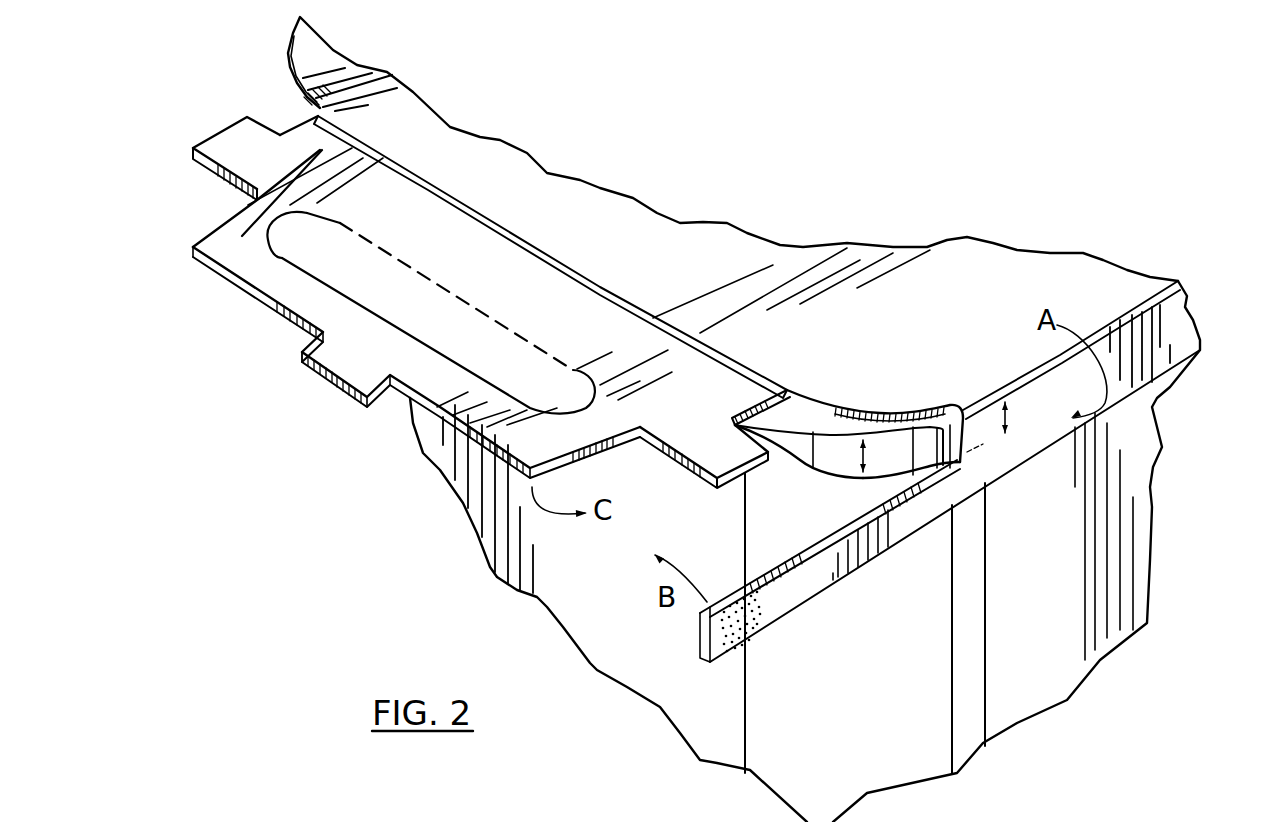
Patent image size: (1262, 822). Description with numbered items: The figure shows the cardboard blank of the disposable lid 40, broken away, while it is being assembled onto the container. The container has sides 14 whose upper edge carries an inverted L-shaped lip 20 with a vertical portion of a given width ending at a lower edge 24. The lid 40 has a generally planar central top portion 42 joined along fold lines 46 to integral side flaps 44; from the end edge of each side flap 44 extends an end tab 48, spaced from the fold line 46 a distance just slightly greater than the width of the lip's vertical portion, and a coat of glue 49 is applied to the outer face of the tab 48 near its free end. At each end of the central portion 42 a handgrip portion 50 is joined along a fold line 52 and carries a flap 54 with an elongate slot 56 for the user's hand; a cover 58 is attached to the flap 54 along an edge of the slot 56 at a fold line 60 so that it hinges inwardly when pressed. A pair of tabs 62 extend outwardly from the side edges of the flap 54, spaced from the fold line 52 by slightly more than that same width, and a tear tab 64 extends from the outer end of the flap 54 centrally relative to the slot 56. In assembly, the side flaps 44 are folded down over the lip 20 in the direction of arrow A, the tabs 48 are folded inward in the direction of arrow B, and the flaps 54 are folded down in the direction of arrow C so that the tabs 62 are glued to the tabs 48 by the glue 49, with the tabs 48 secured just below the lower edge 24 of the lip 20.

The sides 14 is at (1060, 536).
The lip 20 is at (893, 438).
The lower edge 24 is at (813, 462).
The lid 40 is at (727, 222).
The central top portion 42 is at (697, 279).
The side flaps 44 is at (1180, 327).
The fold lines 46 is at (1100, 332).
The end tabs 48 is at (805, 588).
The glue coating 49 is at (727, 633).
The handgrip portions 50 is at (215, 232).
The fold lines 52 is at (738, 375).
The flaps 54 is at (428, 423).
The elongate slots 56 is at (281, 258).
The cover 58 is at (343, 270).
The fold line 60 is at (388, 246).
The tabs 62 is at (225, 137).
The tear tab 64 is at (337, 361).